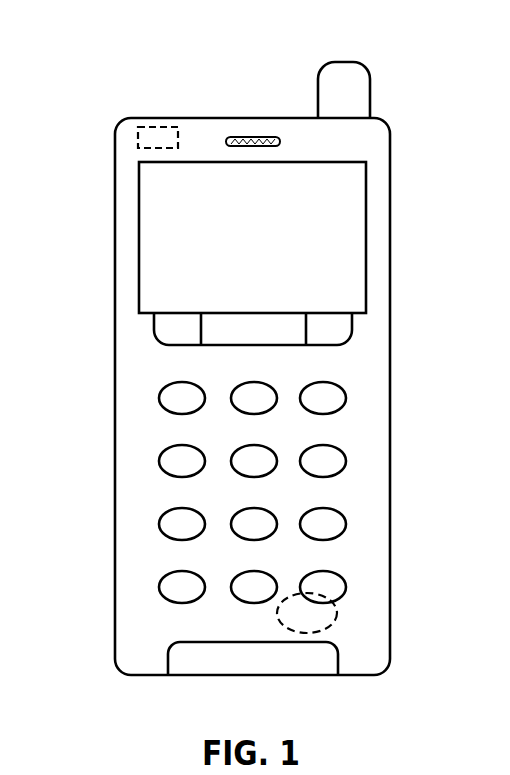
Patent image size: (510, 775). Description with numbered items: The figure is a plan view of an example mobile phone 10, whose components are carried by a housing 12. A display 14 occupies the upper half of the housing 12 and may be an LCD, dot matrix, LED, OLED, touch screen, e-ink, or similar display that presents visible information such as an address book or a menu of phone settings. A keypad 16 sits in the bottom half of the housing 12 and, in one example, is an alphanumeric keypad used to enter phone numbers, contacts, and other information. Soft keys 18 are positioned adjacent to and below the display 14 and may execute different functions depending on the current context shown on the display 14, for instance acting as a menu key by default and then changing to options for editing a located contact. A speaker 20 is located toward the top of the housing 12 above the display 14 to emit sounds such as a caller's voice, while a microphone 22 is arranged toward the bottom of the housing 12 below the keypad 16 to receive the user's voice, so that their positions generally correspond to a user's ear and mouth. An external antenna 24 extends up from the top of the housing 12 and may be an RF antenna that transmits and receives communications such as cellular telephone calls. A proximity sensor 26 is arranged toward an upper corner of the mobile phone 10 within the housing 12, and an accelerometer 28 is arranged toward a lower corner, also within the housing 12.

The mobile phone 10 is at (150, 78).
The housing 12 is at (288, 118).
The display 14 is at (338, 212).
The keypad 16 is at (158, 377).
The soft keys 18 is at (190, 338).
The speaker 20 is at (236, 136).
The microphone 22 is at (160, 653).
The external antenna 24 is at (347, 62).
The proximity sensor 26 is at (148, 128).
The accelerometer 28 is at (329, 628).